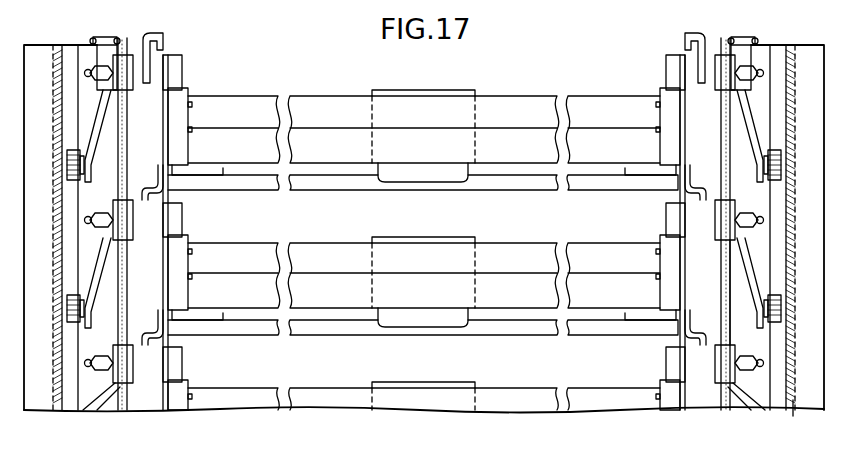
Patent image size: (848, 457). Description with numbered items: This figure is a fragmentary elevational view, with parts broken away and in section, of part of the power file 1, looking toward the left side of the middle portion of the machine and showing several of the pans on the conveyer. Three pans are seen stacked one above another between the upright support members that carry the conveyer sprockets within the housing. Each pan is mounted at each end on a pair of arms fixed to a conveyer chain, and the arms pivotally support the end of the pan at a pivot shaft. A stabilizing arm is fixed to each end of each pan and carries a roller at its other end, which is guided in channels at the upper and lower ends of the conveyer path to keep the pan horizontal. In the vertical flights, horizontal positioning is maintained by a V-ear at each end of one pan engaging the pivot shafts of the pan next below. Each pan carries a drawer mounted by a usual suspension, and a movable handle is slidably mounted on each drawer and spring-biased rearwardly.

The power file 1 is at (785, 423).